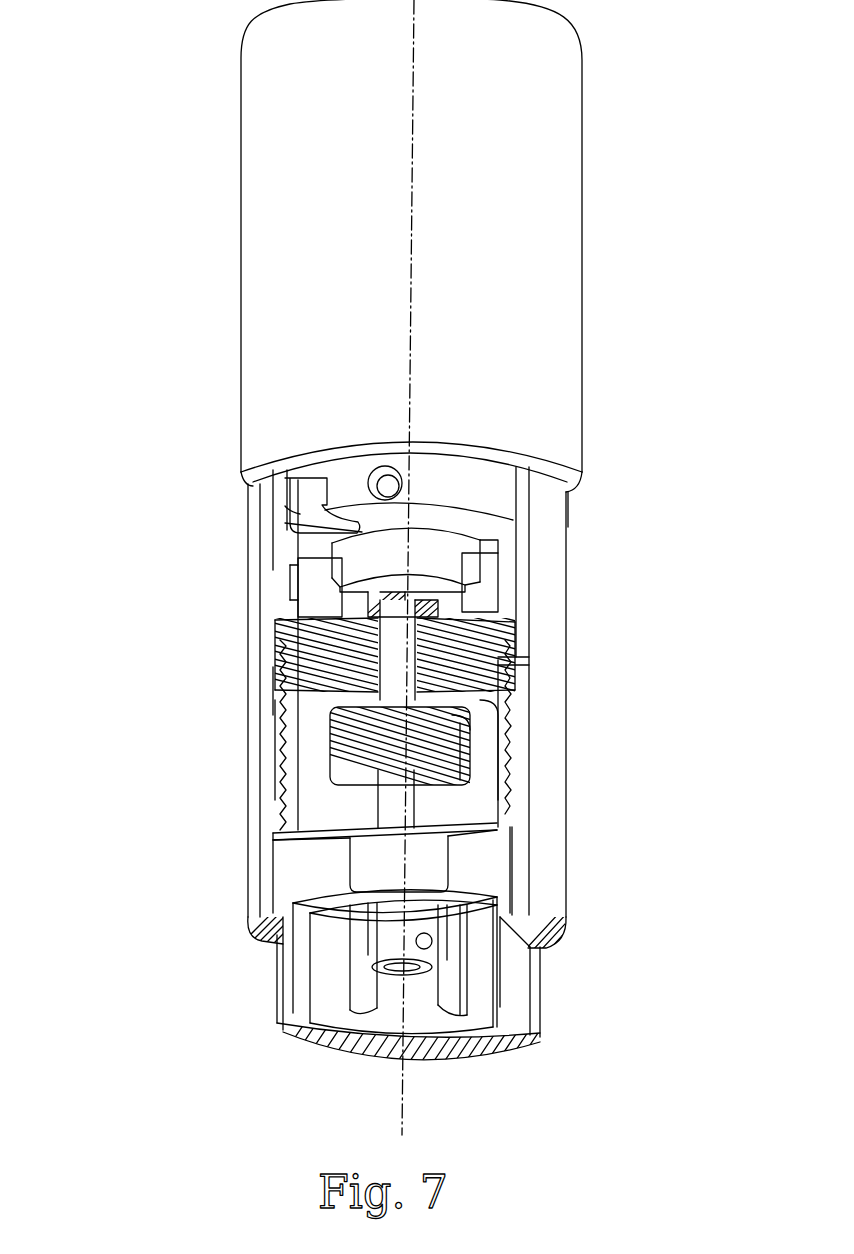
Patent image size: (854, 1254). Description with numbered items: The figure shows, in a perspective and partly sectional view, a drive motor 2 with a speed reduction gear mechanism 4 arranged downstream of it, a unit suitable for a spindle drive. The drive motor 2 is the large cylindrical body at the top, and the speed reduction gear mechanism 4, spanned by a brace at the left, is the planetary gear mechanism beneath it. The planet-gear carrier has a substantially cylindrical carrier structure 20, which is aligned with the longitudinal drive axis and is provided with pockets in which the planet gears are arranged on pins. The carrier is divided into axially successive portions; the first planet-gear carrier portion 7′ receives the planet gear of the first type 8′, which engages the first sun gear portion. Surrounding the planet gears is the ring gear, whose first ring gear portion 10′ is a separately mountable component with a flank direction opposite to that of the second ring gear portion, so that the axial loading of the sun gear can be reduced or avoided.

The drive motor 2 is at (532, 250).
The speed reduction gear mechanism 4 is at (376, 771).
The first planet-gear carrier portion 7′ is at (488, 752).
The planet gear of the first type 8′ is at (325, 733).
The first ring gear portion 10′ is at (547, 888).
The cylindrical carrier structure 20 is at (473, 802).